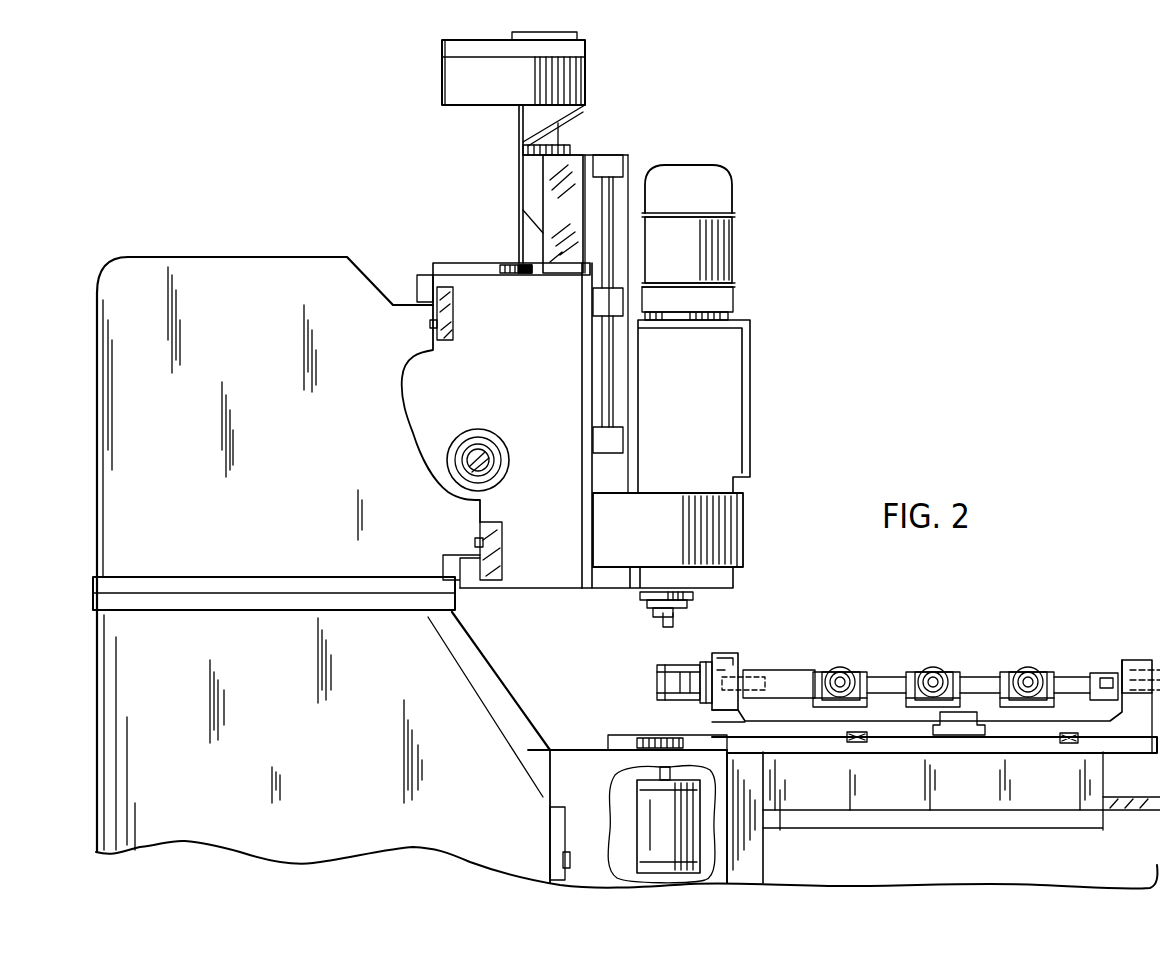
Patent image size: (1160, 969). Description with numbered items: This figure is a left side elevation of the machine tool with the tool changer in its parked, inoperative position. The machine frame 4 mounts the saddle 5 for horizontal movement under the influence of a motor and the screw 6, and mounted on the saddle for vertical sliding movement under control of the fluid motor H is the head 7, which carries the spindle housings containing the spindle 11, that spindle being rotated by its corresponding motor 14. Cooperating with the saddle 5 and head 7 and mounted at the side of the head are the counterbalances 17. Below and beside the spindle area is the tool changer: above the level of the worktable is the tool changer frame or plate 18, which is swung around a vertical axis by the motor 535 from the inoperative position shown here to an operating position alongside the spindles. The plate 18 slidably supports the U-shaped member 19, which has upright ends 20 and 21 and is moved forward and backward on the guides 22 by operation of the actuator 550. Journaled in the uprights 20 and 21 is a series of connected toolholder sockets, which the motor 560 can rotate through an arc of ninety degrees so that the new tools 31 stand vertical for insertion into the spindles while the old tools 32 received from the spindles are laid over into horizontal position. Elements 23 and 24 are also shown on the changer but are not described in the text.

The fluid motor H is at (573, 35).
The machine frame 4 is at (284, 278).
The saddle 5 is at (457, 370).
The screw 6 is at (478, 450).
The head 7 is at (568, 168).
The spindle 11 is at (680, 607).
The motor 14 is at (717, 183).
The counterbalances 17 is at (602, 327).
The tool changer frame or plate 18 is at (812, 743).
The U-shaped member 19 is at (802, 730).
The upright end 20 is at (732, 663).
The upright end 21 is at (1142, 660).
The guides 22 is at (855, 740).
The bearing block 23 is at (1107, 680).
The shaft 24 is at (757, 682).
The new tools 31 is at (847, 675).
The old tools 32 is at (667, 617).
The motor 535 is at (655, 795).
The actuator 550 is at (957, 728).
The motor 560 is at (655, 690).